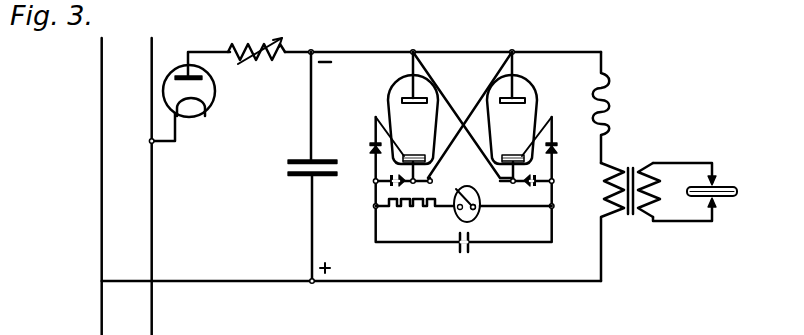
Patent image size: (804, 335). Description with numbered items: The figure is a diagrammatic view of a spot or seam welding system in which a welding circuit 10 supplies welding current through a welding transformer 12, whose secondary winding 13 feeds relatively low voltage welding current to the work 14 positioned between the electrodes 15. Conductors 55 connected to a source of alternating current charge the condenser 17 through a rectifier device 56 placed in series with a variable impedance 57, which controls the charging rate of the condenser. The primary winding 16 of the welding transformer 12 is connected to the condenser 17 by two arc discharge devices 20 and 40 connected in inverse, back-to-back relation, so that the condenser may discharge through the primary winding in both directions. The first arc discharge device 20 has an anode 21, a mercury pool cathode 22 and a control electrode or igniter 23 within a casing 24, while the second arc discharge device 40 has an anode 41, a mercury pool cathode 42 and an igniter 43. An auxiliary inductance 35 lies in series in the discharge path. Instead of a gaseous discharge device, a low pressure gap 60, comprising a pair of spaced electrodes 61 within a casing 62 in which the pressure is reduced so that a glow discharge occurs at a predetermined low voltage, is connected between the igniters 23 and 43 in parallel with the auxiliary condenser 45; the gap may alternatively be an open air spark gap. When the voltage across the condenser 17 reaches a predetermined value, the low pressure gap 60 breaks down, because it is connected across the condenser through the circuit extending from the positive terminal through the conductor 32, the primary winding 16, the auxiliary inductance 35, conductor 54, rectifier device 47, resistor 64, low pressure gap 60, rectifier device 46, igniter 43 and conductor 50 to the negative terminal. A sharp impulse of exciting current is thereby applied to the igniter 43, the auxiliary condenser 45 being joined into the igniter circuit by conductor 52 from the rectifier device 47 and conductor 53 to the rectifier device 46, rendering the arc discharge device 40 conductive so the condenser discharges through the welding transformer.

The welding circuit 10 is at (670, 81).
The welding transformer 12 is at (638, 212).
The secondary winding 13 is at (650, 219).
The work 14 is at (728, 186).
The electrodes 15 is at (716, 178).
The primary winding 16 is at (611, 219).
The condenser 17 is at (292, 160).
The arc discharge device 20 is at (381, 103).
The anode 21 is at (412, 90).
The mercury pool cathode 22 is at (427, 158).
The igniter 23 is at (395, 165).
The casing 24 is at (388, 107).
The conductor 32 is at (484, 283).
The auxiliary inductance 35 is at (611, 111).
The arc discharge device 40 is at (567, 100).
The anode 41 is at (514, 104).
The mercury pool cathode 42 is at (502, 159).
The igniter 43 is at (527, 150).
The auxiliary condenser 45 is at (474, 249).
The rectifier device 46 is at (372, 146).
The rectifier device 47 is at (388, 184).
The conductor 50 is at (433, 76).
The conductor 52 is at (440, 244).
The conductor 53 is at (514, 243).
The conductor 54 is at (482, 95).
The conductors 55 is at (152, 61).
The rectifier device 56 is at (215, 91).
The variable impedance 57 is at (246, 48).
The low pressure gap 60 is at (480, 211).
The electrodes 61 is at (456, 192).
The casing 62 is at (480, 196).
The resistor 64 is at (414, 216).